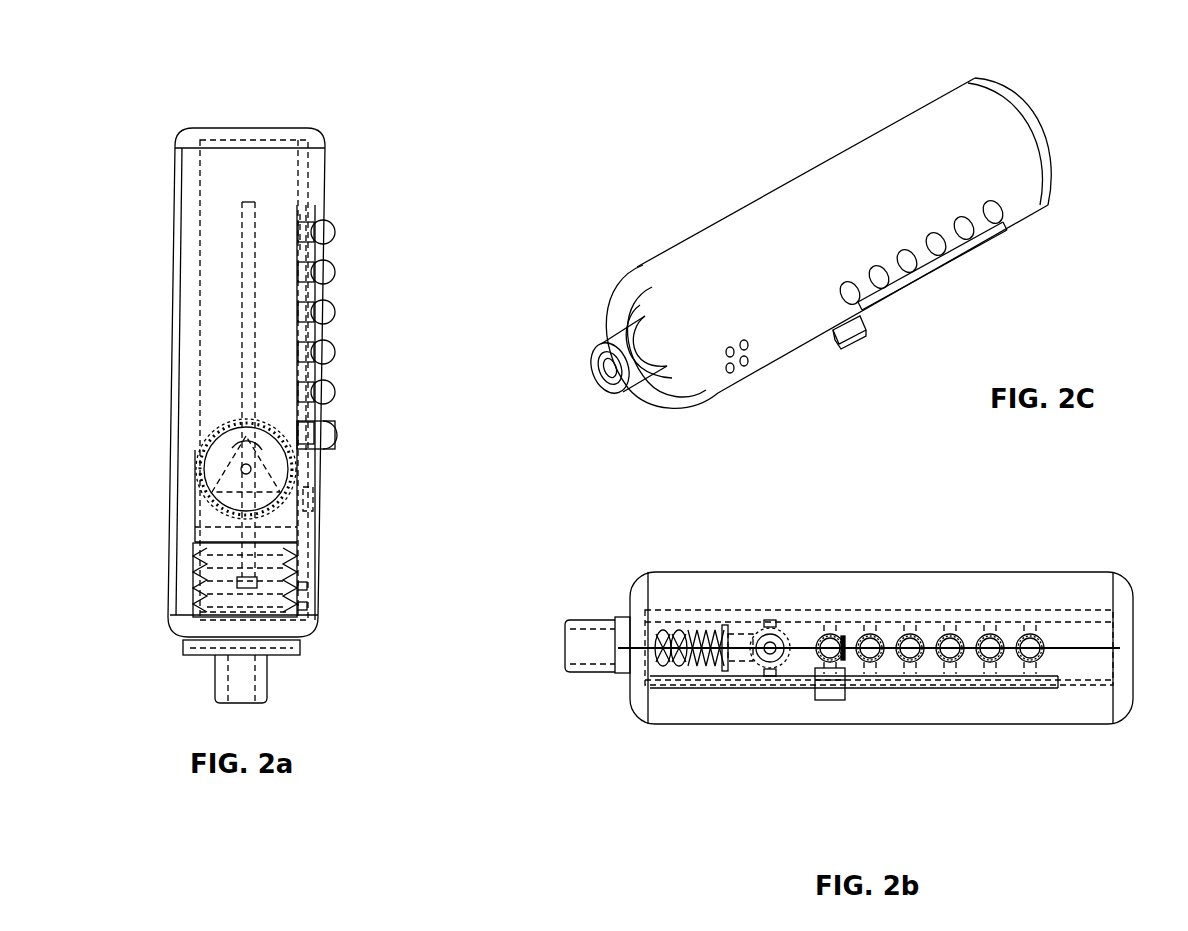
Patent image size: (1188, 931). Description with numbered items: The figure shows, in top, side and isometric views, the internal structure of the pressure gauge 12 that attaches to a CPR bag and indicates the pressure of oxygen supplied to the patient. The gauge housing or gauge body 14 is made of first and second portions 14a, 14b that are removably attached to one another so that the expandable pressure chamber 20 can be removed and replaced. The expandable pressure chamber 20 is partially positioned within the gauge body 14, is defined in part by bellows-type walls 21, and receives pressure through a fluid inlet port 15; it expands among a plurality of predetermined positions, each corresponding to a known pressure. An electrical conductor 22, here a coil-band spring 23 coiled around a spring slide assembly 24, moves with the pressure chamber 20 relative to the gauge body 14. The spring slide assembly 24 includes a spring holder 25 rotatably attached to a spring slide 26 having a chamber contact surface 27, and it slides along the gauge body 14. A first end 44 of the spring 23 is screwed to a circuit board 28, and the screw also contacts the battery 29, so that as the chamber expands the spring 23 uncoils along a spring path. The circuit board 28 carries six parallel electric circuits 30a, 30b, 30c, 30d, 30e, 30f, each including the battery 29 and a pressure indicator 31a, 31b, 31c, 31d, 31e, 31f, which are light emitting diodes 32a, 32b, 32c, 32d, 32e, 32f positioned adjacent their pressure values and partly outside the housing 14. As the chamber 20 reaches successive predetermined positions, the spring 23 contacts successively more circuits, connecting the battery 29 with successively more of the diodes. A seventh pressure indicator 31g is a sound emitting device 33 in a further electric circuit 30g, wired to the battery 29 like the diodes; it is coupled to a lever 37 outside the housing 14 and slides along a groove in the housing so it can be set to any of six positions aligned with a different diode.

In FIG. 2A, the pressure gauge 12 is at (380, 123).
In FIG. 2C, the pressure gauge 12 is at (1056, 54).
In FIG. 2B, the pressure gauge 12 is at (1118, 632).
In FIG. 2A, the gauge body 14 is at (253, 354).
In FIG. 2C, the gauge body 14 is at (875, 259).
In FIG. 2B, the gauge body 14 is at (833, 631).
In FIG. 2C, the first portion 14a is at (682, 202).
In FIG. 2C, the second portion 14b is at (747, 390).
In FIG. 2A, the fluid inlet port 15 is at (247, 691).
In FIG. 2C, the fluid inlet port 15 is at (606, 352).
In FIG. 2B, the fluid inlet port 15 is at (537, 683).
In FIG. 2A, the expandable pressure chamber 20 is at (191, 587).
In FIG. 2B, the expandable pressure chamber 20 is at (642, 584).
In FIG. 2A, the bellows-type walls 21 is at (290, 572).
In FIG. 2B, the bellows-type walls 21 is at (678, 570).
In FIG. 2A, the electrical conductor 22 is at (182, 439).
In FIG. 2A, the coil-band spring 23 is at (172, 459).
In FIG. 2B, the coil-band spring 23 is at (697, 690).
In FIG. 2A, the spring slide assembly 24 is at (325, 395).
In FIG. 2A, the spring holder 25 is at (206, 424).
In FIG. 2A, the spring slide 26 is at (183, 496).
In FIG. 2A, the chamber contact surface 27 is at (301, 561).
In FIG. 2A, the circuit board 28 is at (369, 374).
In FIG. 2A, the battery 29 is at (374, 500).
In FIG. 2A, the first electrical circuit 30a is at (213, 380).
In FIG. 2B, the first electrical circuit 30a is at (868, 718).
In FIG. 2A, the second electrical circuit 30b is at (213, 347).
In FIG. 2B, the second electrical circuit 30b is at (901, 706).
In FIG. 2A, the third electrical circuit 30c is at (212, 312).
In FIG. 2B, the third electrical circuit 30c is at (969, 737).
In FIG. 2A, the fourth electric circuit 30d is at (207, 276).
In FIG. 2B, the fourth electric circuit 30d is at (995, 725).
In FIG. 2A, the fifth electrical circuit 30e is at (204, 240).
In FIG. 2B, the fifth electrical circuit 30e is at (1027, 712).
In FIG. 2A, the sixth electric circuit 30f is at (204, 208).
In FIG. 2B, the sixth electric circuit 30f is at (1079, 695).
In FIG. 2B, the electric circuit 30g is at (854, 782).
In FIG. 2A, the first pressure indicator 31a is at (304, 383).
In FIG. 2B, the first pressure indicator 31a is at (814, 676).
In FIG. 2A, the second pressure indicator 31b is at (307, 348).
In FIG. 2B, the second pressure indicator 31b is at (834, 645).
In FIG. 2A, the third pressure indicator 31c is at (304, 313).
In FIG. 2B, the third pressure indicator 31c is at (887, 660).
In FIG. 2A, the fourth pressure indicator 31d is at (301, 277).
In FIG. 2B, the fourth pressure indicator 31d is at (973, 641).
In FIG. 2A, the fifth pressure indicator 31e is at (300, 241).
In FIG. 2B, the fifth pressure indicator 31e is at (1008, 643).
In FIG. 2A, the sixth pressure indicator 31f is at (295, 208).
In FIG. 2B, the sixth pressure indicator 31f is at (1057, 640).
In FIG. 2B, the seventh pressure indicator 31g is at (740, 755).
In FIG. 2A, the first light emitting diode 32a is at (317, 435).
In FIG. 2C, the first light emitting diode 32a is at (921, 293).
In FIG. 2B, the first light emitting diode 32a is at (830, 648).
In FIG. 2A, the second light emitting diode 32b is at (323, 392).
In FIG. 2C, the second light emitting diode 32b is at (939, 302).
In FIG. 2B, the second light emitting diode 32b is at (870, 648).
In FIG. 2A, the third light emitting diode 32c is at (323, 352).
In FIG. 2C, the third light emitting diode 32c is at (960, 278).
In FIG. 2B, the third light emitting diode 32c is at (910, 648).
In FIG. 2A, the fourth light emitting diode 32d is at (323, 312).
In FIG. 2C, the fourth light emitting diode 32d is at (999, 259).
In FIG. 2B, the fourth light emitting diode 32d is at (950, 648).
In FIG. 2A, the fifth light emitting diode 32e is at (323, 272).
In FIG. 2C, the fifth light emitting diode 32e is at (1025, 237).
In FIG. 2B, the fifth light emitting diode 32e is at (990, 648).
In FIG. 2A, the sixth light emitting diode 32f is at (323, 232).
In FIG. 2C, the sixth light emitting diode 32f is at (1052, 214).
In FIG. 2B, the sixth light emitting diode 32f is at (1030, 648).
In FIG. 2B, the sound emitting device 33 is at (786, 748).
In FIG. 2C, the lever 37 is at (844, 355).
In FIG. 2A, the first end 44 is at (384, 456).